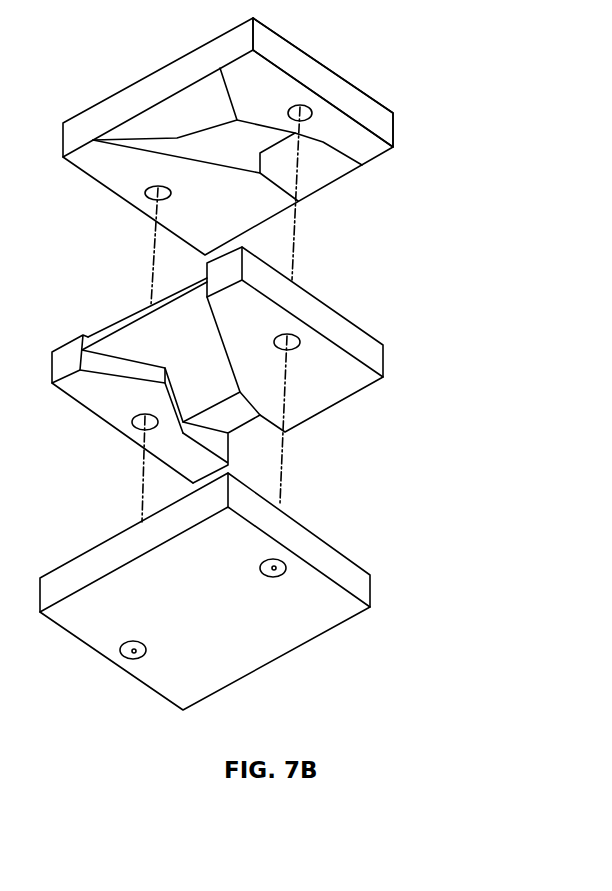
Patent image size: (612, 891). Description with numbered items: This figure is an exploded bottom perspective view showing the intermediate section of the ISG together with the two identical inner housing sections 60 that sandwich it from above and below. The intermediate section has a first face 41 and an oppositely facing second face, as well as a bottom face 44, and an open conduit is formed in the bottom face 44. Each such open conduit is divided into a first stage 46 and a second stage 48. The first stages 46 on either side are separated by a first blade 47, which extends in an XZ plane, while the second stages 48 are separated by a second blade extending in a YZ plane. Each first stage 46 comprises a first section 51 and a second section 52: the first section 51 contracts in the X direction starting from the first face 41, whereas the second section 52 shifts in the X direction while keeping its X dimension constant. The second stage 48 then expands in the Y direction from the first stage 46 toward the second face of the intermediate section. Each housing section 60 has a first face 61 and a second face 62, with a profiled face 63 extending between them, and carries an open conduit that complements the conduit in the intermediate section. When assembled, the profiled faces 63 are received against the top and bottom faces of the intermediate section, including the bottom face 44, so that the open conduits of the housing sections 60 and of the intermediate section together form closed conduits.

The first face 41 is at (68, 352).
The bottom face 44 is at (107, 413).
The first stage 46 is at (196, 351).
The first blade 47 is at (130, 323).
The second stage 48 is at (233, 422).
The first section 51 is at (137, 357).
The second section 52 is at (211, 397).
The inner housing section 60 is at (118, 676).
The first face 61 is at (195, 62).
The second face 62 is at (381, 158).
The profiled face 63 is at (122, 178).